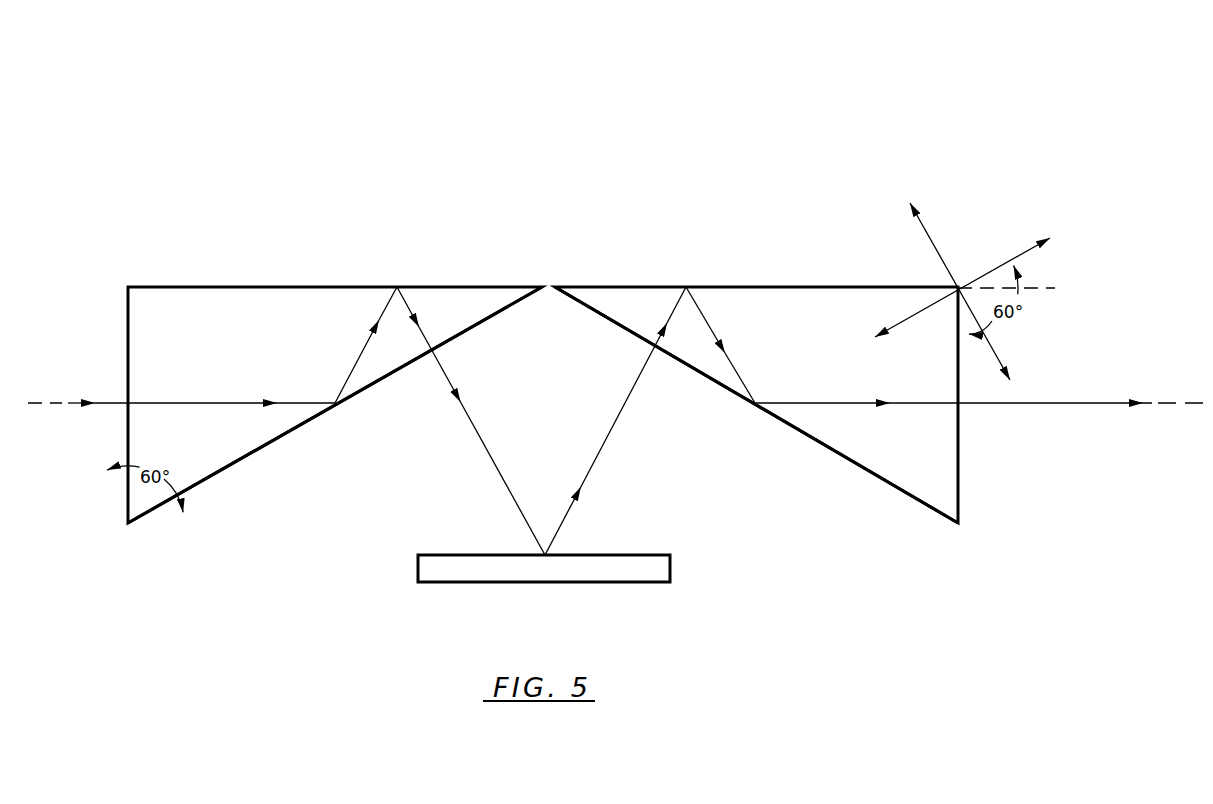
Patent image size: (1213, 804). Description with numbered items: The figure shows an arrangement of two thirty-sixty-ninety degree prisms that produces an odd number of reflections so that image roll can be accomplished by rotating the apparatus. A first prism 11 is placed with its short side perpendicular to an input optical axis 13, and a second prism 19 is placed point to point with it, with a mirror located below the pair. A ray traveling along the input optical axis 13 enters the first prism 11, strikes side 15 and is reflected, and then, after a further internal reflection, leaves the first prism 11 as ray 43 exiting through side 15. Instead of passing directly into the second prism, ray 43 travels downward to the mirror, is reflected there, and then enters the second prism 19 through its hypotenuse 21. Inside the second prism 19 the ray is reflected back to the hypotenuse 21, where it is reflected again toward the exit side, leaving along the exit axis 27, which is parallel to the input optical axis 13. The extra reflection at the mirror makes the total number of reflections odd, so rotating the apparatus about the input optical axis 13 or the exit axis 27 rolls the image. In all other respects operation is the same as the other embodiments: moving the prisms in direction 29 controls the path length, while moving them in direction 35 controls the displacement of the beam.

The first prism 11 is at (341, 285).
The input optical axis 13 is at (69, 402).
The side of first prism 15 is at (384, 373).
The second prism 19 is at (961, 473).
The hypotenuse of second prism 21 is at (849, 460).
The exit axis 27 is at (1050, 403).
The path length adjustment direction 29 is at (930, 233).
The displacement adjustment direction 35 is at (1007, 262).
The ray 43 is at (495, 462).